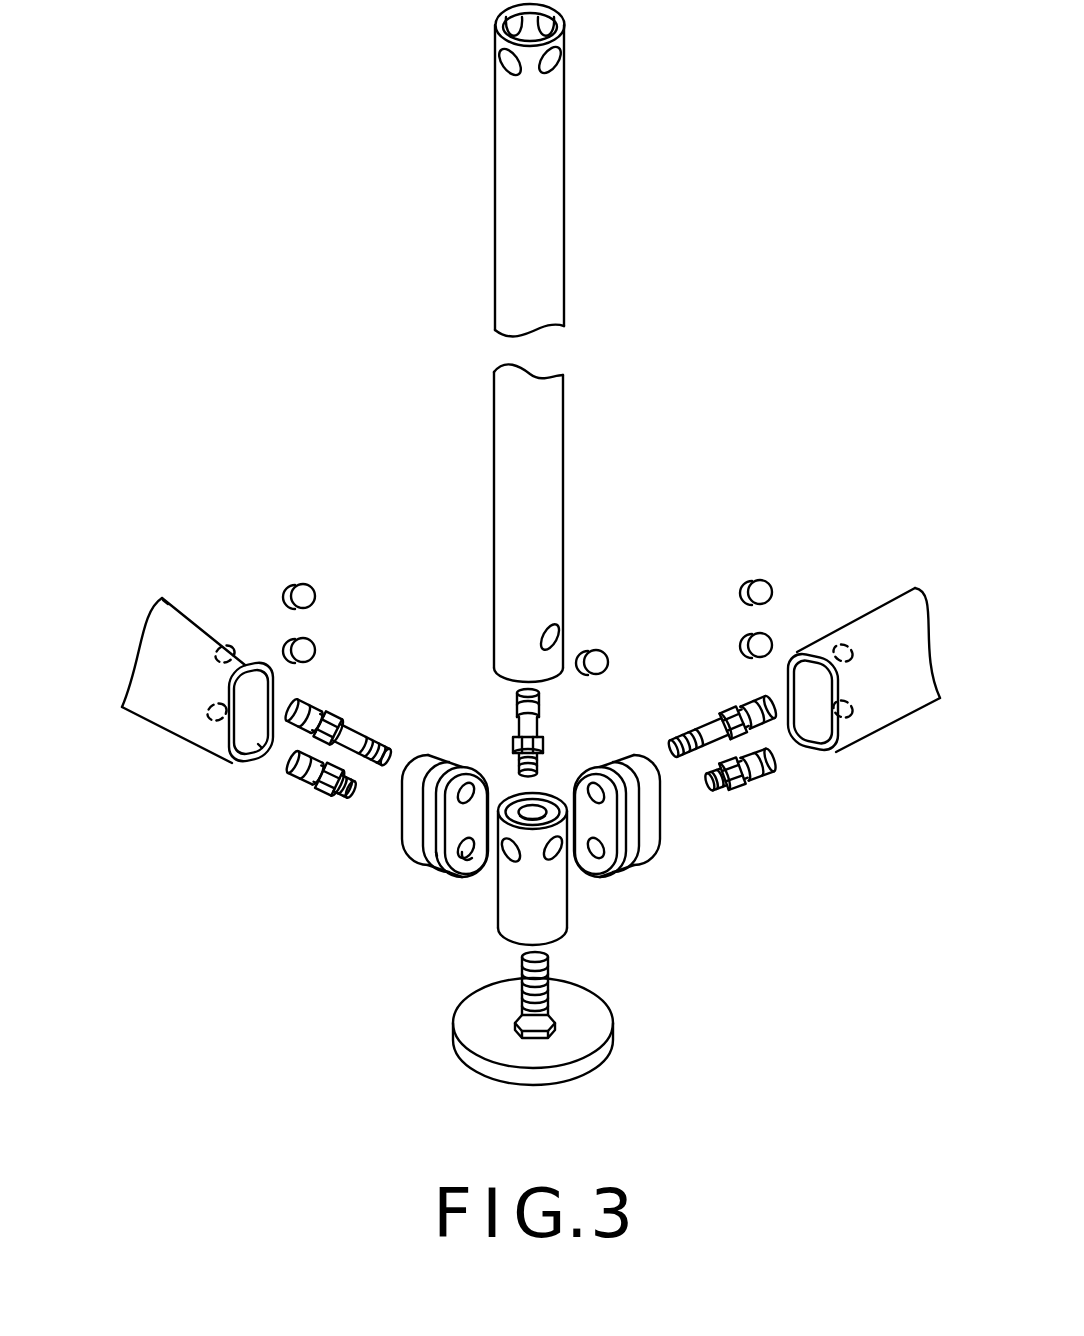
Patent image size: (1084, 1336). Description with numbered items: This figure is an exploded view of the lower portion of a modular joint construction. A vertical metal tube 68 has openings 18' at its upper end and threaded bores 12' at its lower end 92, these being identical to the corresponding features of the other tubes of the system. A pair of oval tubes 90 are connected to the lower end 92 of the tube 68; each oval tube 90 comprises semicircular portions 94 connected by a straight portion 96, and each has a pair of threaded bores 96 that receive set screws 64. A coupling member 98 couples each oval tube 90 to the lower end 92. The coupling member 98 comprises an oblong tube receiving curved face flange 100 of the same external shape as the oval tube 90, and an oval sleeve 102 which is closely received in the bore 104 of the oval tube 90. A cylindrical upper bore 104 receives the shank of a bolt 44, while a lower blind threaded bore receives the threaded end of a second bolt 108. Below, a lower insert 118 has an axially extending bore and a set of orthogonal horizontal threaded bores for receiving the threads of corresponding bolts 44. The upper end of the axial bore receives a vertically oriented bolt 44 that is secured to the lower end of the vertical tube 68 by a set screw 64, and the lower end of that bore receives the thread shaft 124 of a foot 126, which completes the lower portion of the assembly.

The openings 18' is at (577, 67).
The metal tube 68 is at (564, 256).
The lower end 92 is at (494, 612).
The threaded bores 12' is at (589, 585).
The set screw 64 is at (606, 652).
The bolt 44 is at (347, 721).
The semicircular portions 94 is at (184, 604).
The threaded bores 96 is at (232, 648).
The oval tubes 90 is at (190, 733).
The bore 104 is at (248, 748).
The second bolt 108 is at (308, 783).
The oval sleeve 102 is at (418, 773).
The coupling member 98 is at (420, 860).
The curved face flange 100 is at (446, 875).
The lower insert 118 is at (553, 888).
The thread shaft 124 is at (518, 1004).
The foot 126 is at (560, 1076).